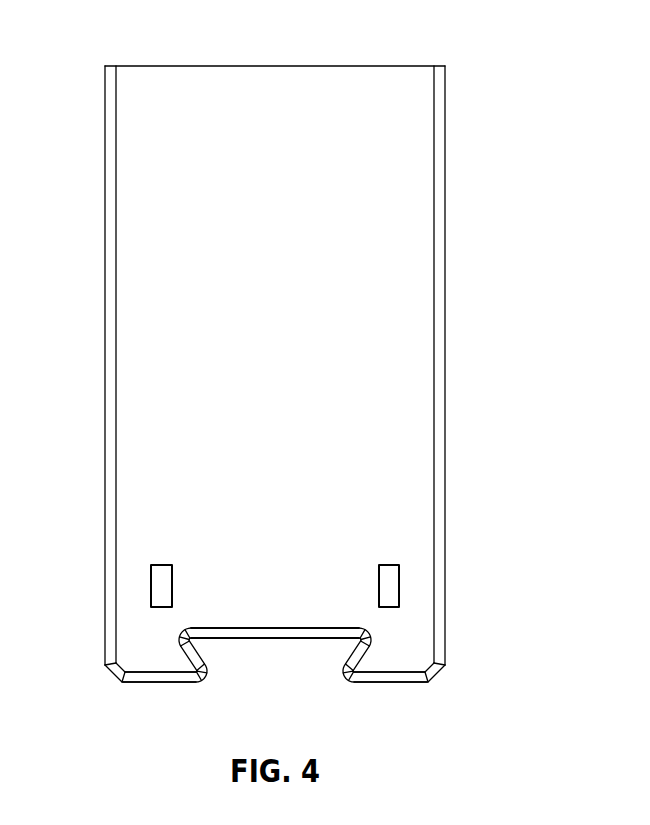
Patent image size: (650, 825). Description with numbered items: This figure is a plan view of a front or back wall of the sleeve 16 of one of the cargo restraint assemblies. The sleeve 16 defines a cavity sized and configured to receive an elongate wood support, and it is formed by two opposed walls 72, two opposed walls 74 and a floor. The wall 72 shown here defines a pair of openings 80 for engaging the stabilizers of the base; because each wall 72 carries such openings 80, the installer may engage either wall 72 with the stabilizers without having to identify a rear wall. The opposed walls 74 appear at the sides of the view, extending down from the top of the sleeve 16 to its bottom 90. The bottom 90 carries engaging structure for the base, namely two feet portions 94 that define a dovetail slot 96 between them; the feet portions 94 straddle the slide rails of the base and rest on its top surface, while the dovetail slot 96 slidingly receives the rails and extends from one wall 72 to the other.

The sleeve 16 is at (282, 408).
The opposed walls 72 is at (313, 560).
The opposed walls 74 is at (105, 300).
The openings 80 is at (163, 585).
The bottom 90 is at (400, 683).
The feet portions 94 is at (159, 655).
The dovetail slot 96 is at (238, 640).